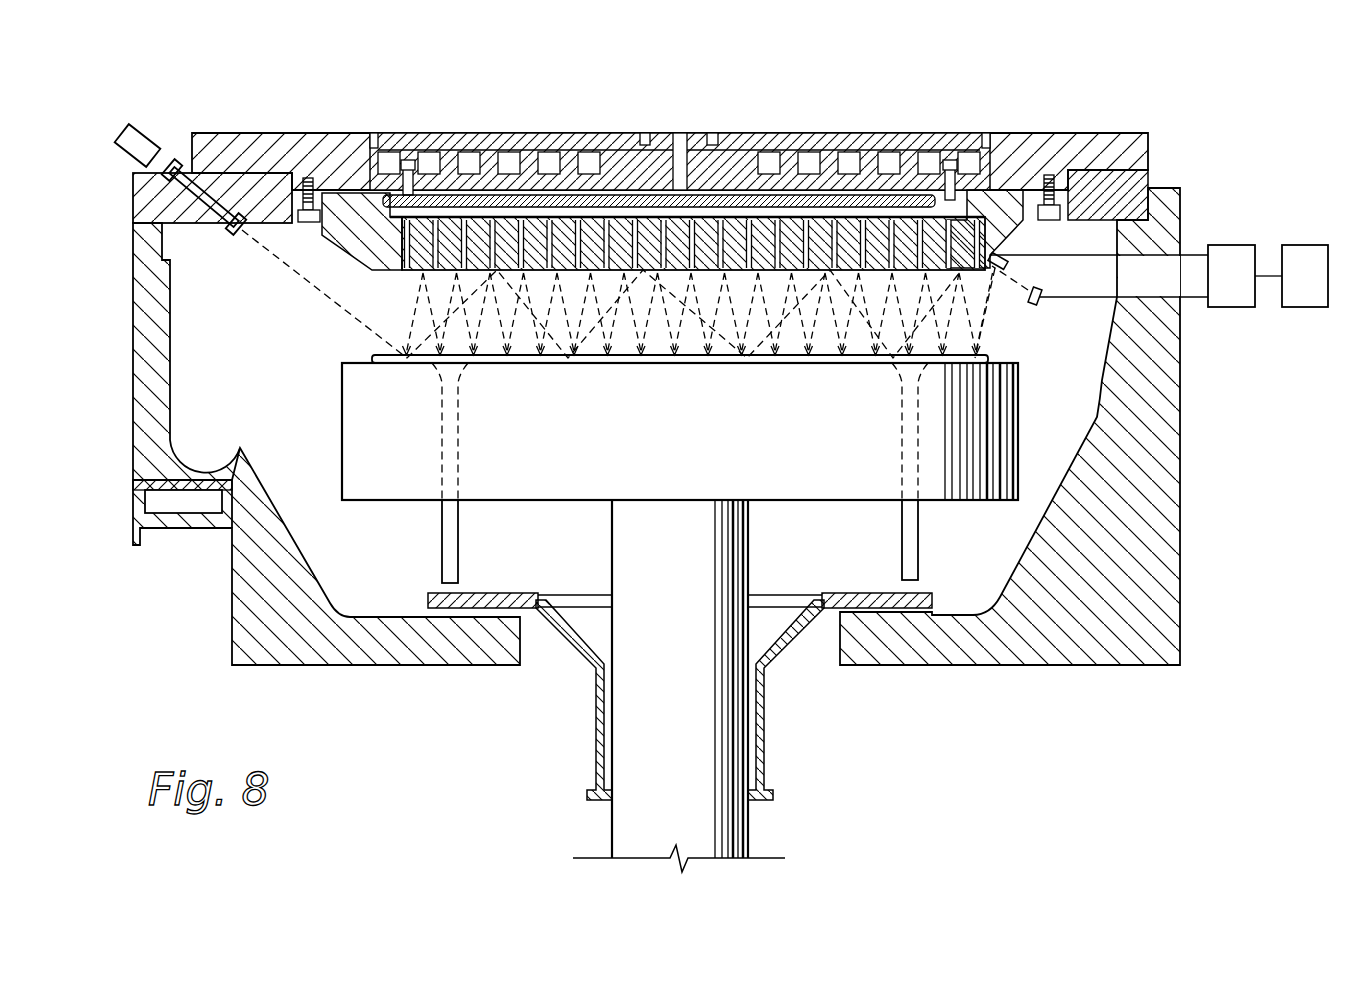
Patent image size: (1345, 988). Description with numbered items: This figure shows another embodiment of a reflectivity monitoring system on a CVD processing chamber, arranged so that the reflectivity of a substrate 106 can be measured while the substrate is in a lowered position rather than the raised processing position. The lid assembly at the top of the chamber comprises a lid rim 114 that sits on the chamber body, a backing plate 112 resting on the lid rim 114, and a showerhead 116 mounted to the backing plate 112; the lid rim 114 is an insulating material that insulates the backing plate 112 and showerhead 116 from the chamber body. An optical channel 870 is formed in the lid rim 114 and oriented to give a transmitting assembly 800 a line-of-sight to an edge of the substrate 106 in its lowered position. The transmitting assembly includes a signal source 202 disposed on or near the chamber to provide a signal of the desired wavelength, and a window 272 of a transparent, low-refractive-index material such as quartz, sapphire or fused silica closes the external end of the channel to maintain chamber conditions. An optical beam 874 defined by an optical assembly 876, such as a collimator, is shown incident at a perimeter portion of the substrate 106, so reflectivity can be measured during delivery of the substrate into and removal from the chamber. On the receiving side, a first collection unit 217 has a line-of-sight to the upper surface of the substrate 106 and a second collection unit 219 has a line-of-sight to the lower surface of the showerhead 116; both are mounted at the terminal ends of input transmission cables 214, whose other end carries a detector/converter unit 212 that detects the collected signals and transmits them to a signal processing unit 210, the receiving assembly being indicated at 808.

The transmitting assembly 800 is at (210, 66).
The signal source 202 is at (149, 130).
The window 272 is at (175, 162).
The optical channel 870 is at (212, 192).
The backing plate 112 is at (296, 132).
The lid rim 114 is at (133, 196).
The optical assembly 876 is at (232, 237).
The optical beam 874 is at (318, 291).
The showerhead 116 is at (388, 270).
The substrate 106 is at (688, 368).
The input transmission cables 214 is at (1090, 254).
The first collection unit 217 is at (1010, 263).
The second collection unit 219 is at (1036, 306).
The detector/converter unit 212 is at (1228, 245).
The signal processing unit 210 is at (1306, 245).
The sensing system 808 is at (1248, 322).